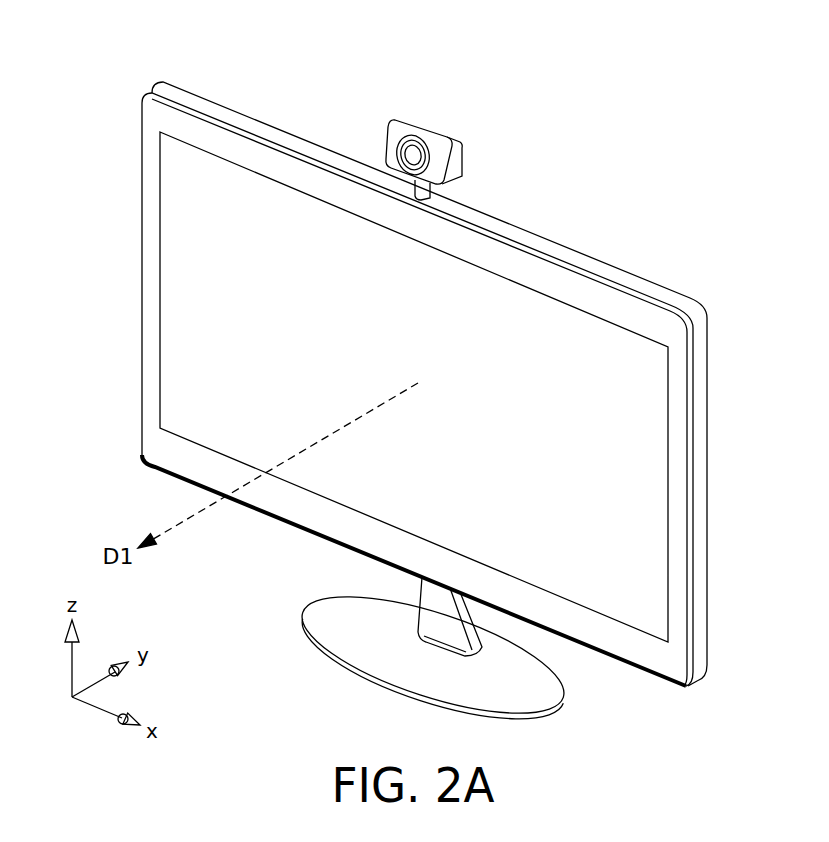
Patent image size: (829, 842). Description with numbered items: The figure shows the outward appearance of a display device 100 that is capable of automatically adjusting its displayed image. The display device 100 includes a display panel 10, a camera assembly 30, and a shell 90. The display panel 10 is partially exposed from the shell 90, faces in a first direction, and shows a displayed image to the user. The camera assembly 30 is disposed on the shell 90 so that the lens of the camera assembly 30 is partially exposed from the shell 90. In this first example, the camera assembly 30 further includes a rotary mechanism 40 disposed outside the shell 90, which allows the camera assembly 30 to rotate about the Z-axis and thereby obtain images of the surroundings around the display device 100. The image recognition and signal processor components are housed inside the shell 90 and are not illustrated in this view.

The display device 100 is at (632, 124).
The display panel 10 is at (220, 282).
The shell 90 is at (152, 159).
The camera assembly 30 is at (425, 128).
The rotary mechanism 40 is at (415, 197).